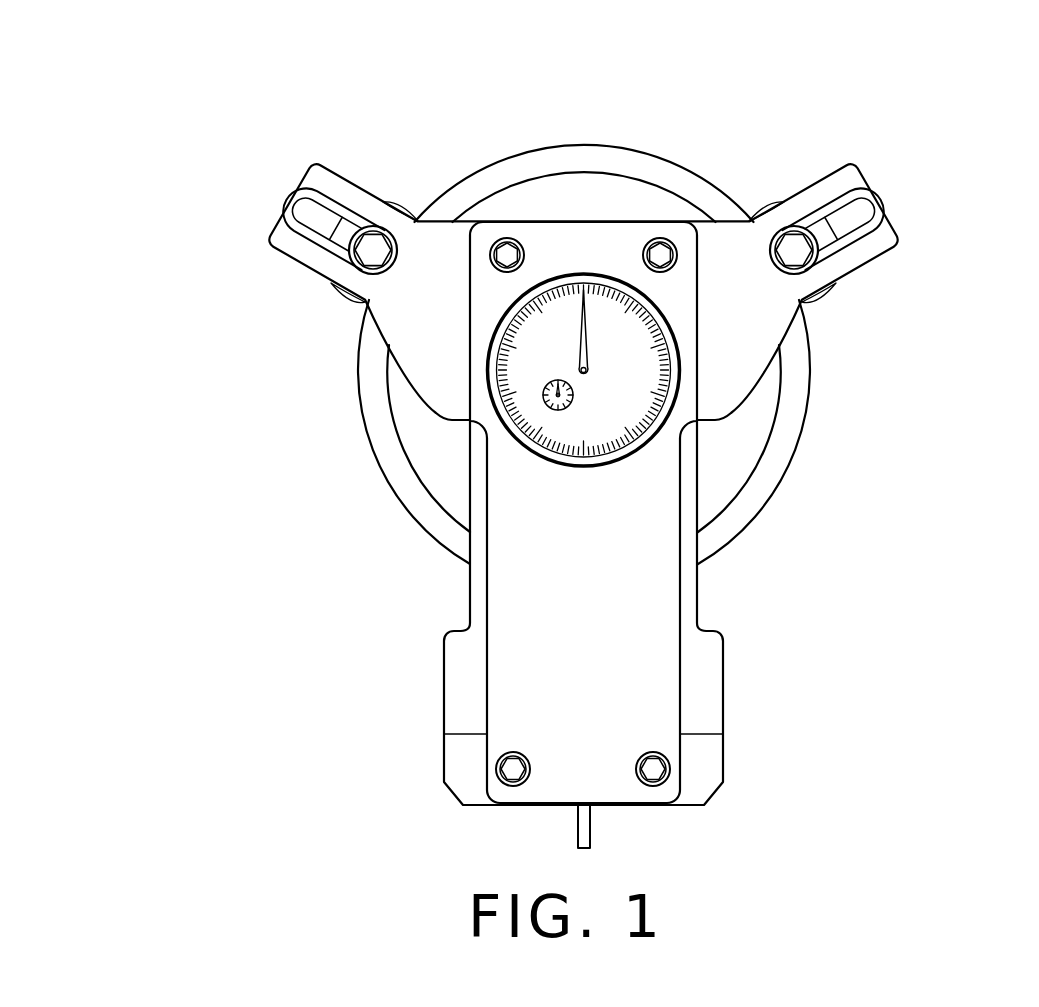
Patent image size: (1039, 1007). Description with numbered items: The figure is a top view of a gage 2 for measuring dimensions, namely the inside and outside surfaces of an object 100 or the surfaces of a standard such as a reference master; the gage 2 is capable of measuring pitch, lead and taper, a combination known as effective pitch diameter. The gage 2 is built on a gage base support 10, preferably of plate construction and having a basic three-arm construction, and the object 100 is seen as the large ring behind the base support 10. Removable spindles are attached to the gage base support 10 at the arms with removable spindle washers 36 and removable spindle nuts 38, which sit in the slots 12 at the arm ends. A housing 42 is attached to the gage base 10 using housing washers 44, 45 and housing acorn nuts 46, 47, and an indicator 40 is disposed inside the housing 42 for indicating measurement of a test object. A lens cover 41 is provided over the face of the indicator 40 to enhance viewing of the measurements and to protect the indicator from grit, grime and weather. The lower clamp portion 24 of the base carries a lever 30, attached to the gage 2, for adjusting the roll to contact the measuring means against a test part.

The gage 2 is at (758, 683).
The gage base support 10 is at (745, 333).
The left arm slot 12 is at (340, 233).
The lower clamp block 24 is at (723, 777).
The lever 30 is at (592, 847).
The removable spindle washer 36 is at (810, 265).
The removable spindle nut 38 is at (797, 252).
The indicator 40 is at (630, 393).
The lens cover 41 is at (623, 457).
The housing 42 is at (548, 528).
The housing washer 44 is at (512, 767).
The housing washer 45 is at (494, 267).
The housing acorn nut 46 is at (497, 771).
The housing acorn nut 47 is at (497, 257).
The object 100 is at (407, 520).